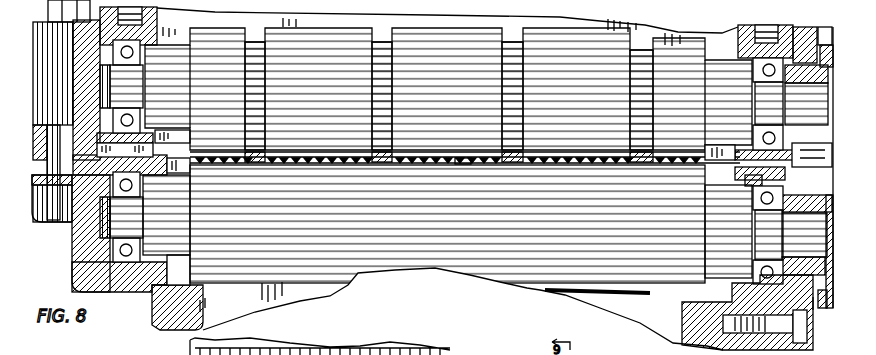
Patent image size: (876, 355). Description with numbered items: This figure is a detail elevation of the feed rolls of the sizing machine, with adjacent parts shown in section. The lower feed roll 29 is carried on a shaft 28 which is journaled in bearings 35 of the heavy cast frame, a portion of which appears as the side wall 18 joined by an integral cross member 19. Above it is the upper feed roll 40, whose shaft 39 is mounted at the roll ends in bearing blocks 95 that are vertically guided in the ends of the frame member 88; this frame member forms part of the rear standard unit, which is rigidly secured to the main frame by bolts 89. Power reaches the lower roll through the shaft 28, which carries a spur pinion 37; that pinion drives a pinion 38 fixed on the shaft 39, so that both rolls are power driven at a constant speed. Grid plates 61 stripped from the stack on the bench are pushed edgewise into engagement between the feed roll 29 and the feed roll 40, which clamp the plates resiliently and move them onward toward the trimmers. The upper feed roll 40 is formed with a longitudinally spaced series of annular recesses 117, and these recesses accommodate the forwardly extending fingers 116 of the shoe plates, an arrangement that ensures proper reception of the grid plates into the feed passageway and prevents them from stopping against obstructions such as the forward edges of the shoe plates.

The side wall 18 is at (153, 318).
The cross member 19 is at (587, 293).
The shaft 28 is at (792, 237).
The feed roll 29 is at (518, 255).
The bearing 35 is at (126, 257).
The spur pinion 37 is at (822, 275).
The pinion 38 is at (827, 67).
The shaft 39 is at (815, 92).
The upper feed roll 40 is at (585, 55).
The grid plate 61 is at (463, 165).
The frame member 88 is at (50, 50).
The bolt 89 is at (68, 12).
The bearing block 95 is at (157, 24).
The finger 116 is at (623, 165).
The annular recess 117 is at (385, 50).